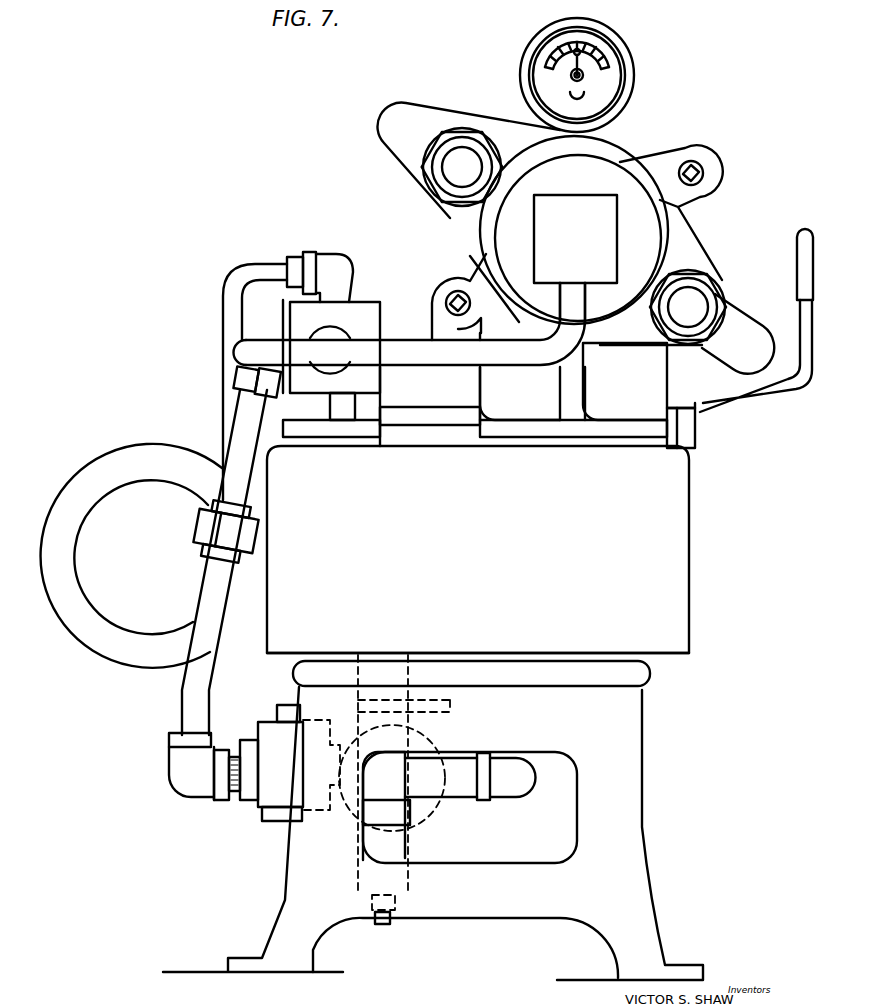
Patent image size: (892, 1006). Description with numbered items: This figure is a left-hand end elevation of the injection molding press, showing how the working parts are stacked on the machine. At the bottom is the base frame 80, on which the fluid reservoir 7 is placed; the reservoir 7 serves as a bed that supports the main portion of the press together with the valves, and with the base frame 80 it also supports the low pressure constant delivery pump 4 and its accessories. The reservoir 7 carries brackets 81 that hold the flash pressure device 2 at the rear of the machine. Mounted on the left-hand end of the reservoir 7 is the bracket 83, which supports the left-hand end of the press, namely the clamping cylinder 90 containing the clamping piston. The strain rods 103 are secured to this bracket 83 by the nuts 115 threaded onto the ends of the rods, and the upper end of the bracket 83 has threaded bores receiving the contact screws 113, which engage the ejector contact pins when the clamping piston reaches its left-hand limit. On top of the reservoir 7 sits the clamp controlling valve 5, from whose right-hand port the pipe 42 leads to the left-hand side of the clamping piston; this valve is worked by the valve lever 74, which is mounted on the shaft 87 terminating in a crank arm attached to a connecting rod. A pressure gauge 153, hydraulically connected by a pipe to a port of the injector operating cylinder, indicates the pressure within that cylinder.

The flash pressure device 2 is at (115, 447).
The low pressure constant delivery pump 4 is at (437, 820).
The clamp controlling valve 5 is at (365, 313).
The fluid reservoir 7 is at (680, 536).
The pipe 42 is at (532, 368).
The valve lever 74 is at (801, 265).
The base frame 80 is at (625, 846).
The brackets 81 is at (192, 483).
The bracket 83 is at (507, 138).
The shaft 87 is at (443, 423).
The clamping cylinder 90 is at (613, 172).
The strain rods 103 is at (467, 159).
The contact screws 113 is at (455, 294).
The nuts 115 is at (458, 146).
The pressure gauge 153 is at (522, 57).